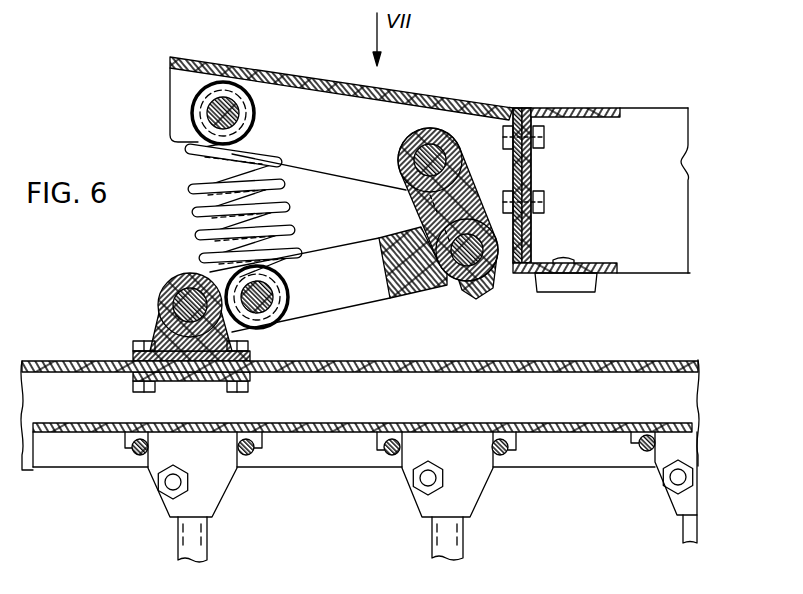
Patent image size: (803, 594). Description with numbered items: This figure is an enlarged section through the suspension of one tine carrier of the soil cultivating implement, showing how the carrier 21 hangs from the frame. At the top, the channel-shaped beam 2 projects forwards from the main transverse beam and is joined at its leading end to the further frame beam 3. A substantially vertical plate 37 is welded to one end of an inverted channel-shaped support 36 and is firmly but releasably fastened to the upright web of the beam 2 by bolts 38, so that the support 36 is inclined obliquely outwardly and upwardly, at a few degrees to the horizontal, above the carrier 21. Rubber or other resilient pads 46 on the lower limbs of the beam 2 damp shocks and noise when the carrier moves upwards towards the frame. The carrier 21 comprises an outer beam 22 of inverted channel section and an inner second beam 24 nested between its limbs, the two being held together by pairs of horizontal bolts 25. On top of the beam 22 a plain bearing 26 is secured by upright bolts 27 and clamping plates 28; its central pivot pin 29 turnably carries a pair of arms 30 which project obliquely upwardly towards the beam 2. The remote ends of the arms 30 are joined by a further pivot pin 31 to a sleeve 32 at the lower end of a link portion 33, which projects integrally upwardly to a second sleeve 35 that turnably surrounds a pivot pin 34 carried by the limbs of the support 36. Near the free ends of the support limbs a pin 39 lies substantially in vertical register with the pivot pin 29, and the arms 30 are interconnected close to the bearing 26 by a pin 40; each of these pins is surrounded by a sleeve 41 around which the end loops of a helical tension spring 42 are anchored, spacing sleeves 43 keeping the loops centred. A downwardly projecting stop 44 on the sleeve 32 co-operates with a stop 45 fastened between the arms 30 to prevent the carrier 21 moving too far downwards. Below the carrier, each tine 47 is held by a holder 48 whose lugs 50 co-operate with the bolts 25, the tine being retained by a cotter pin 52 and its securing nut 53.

The beam 2 is at (580, 112).
The frame beam 3 is at (663, 111).
The carrier 21 is at (665, 342).
The beam 22 is at (68, 360).
The second beam 24 is at (570, 421).
The bolts 25 is at (132, 450).
The bearing 26 is at (170, 292).
The bolts 27 is at (133, 345).
The clamping plates 28 is at (190, 381).
The pivot pin 29 is at (165, 318).
The arms 30 is at (355, 308).
The pivot pin 31 is at (489, 282).
The sleeve 32 is at (461, 283).
The link portion 33 is at (482, 175).
The pivot pin 34 is at (414, 156).
The second sleeve 35 is at (445, 142).
The support 36 is at (350, 84).
The vertical plate 37 is at (522, 110).
The bolts 38 is at (547, 137).
The pin 39 is at (200, 106).
The pin 40 is at (283, 291).
The sleeve 41 is at (240, 112).
The helical tension spring 42 is at (200, 218).
The spacing sleeves 43 is at (192, 142).
The stop 44 is at (476, 305).
The stop 45 is at (418, 298).
The resilient pads 46 is at (573, 295).
The tine 47 is at (172, 553).
The holder 48 is at (214, 512).
The lugs 50 is at (376, 440).
The cotter pin 52 is at (416, 487).
The securing nut 53 is at (163, 489).